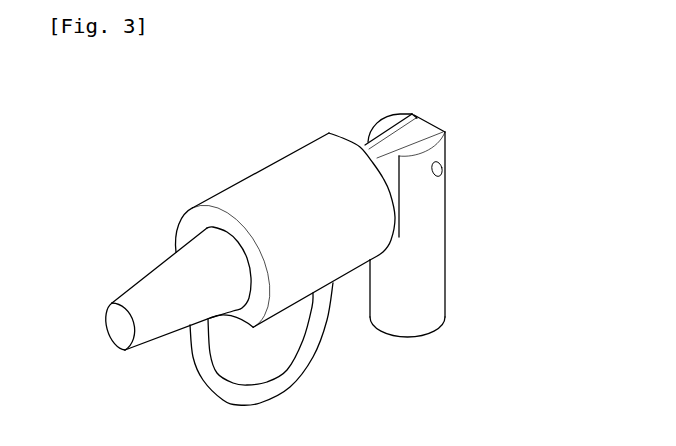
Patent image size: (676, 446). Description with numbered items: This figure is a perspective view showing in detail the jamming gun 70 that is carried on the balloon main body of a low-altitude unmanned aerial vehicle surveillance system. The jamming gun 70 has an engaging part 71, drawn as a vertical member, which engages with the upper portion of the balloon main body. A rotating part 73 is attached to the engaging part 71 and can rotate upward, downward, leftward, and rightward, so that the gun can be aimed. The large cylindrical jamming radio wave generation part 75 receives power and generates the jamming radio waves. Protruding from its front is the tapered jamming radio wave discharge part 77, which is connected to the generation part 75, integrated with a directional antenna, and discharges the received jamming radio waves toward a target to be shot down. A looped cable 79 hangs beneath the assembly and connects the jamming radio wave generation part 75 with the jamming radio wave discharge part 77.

The jamming gun 70 is at (160, 200).
The engaging part 71 is at (418, 285).
The rotating part 73 is at (405, 140).
The jamming radio wave generation part 75 is at (295, 172).
The jamming radio wave discharge part 77 is at (157, 293).
The cable 79 is at (290, 363).